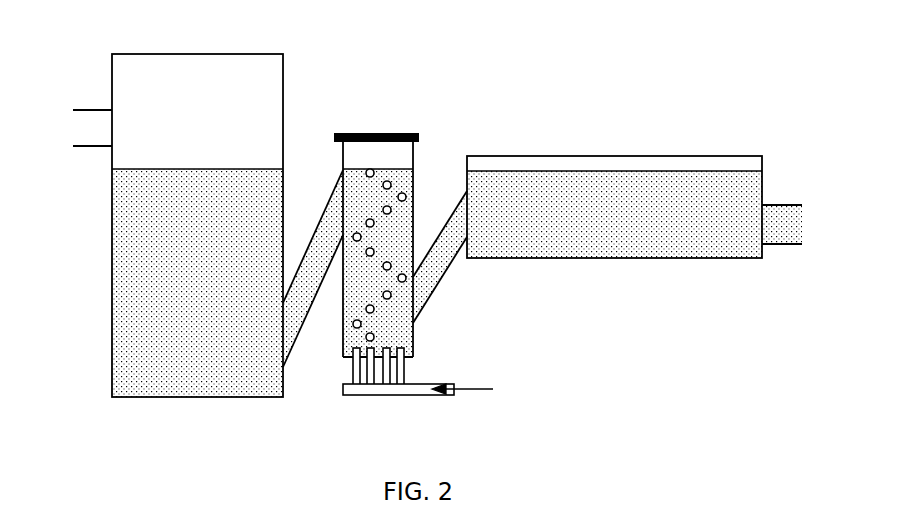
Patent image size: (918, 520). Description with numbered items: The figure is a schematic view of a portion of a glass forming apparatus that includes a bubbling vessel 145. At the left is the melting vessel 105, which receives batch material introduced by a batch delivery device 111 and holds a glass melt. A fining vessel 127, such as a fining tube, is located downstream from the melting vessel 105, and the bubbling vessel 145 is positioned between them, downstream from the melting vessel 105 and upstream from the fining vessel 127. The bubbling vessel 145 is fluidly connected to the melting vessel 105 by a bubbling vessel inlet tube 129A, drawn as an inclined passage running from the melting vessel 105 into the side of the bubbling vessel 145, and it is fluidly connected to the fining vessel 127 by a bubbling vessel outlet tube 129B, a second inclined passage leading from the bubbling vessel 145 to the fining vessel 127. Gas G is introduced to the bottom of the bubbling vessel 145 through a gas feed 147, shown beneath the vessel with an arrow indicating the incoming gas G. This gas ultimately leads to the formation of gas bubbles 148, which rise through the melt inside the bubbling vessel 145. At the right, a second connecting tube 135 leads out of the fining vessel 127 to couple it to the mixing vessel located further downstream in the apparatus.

The melting vessel 105 is at (200, 406).
The batch delivery device 111 is at (93, 110).
The bubbling vessel inlet tube 129A is at (295, 308).
The bubbling vessel outlet tube 129B is at (435, 265).
The bubbling vessel 145 is at (413, 180).
The gas bubbles 148 is at (383, 210).
The fining vessel 127 is at (617, 258).
The second connecting tube 135 is at (773, 247).
The gas feed 147 is at (390, 395).
The gas G is at (473, 390).